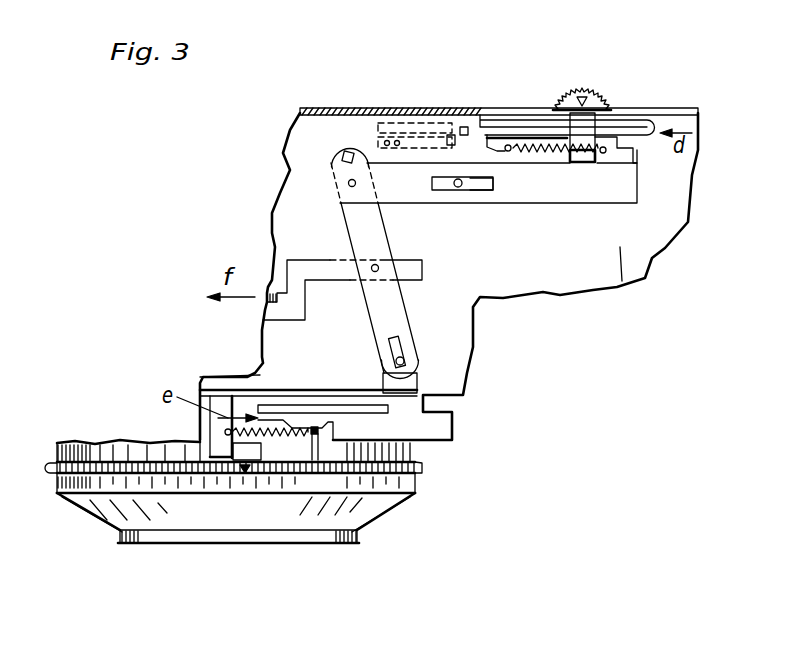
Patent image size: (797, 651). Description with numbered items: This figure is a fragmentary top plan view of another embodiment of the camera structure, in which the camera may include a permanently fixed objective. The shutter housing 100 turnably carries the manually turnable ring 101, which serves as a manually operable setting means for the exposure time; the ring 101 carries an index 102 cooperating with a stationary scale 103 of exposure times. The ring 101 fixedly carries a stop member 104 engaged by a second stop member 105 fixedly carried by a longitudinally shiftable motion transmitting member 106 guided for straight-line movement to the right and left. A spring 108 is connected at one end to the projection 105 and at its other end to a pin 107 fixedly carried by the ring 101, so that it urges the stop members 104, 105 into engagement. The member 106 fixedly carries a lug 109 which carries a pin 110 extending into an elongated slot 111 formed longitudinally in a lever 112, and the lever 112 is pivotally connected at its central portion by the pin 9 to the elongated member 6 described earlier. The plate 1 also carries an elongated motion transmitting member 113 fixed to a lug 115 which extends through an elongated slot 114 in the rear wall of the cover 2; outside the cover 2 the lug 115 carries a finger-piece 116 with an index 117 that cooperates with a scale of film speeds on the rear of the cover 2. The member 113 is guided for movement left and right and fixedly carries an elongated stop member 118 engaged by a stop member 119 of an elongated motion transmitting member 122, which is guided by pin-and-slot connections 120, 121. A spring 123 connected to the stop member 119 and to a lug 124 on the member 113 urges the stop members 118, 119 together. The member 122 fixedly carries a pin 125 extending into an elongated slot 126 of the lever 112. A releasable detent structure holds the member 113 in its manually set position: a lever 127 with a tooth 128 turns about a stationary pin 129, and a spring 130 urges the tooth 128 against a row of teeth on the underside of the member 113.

The plate 1 is at (305, 135).
The cover 2 is at (316, 110).
The elongated member 6 is at (325, 266).
The pin 9 is at (380, 266).
The shutter housing 100 is at (417, 455).
The manually turnable ring 101 is at (418, 480).
The index 102 is at (240, 474).
The stationary scale 103 is at (258, 482).
The stop member 104 is at (255, 455).
The second stop member 105 is at (220, 449).
The motion transmitting member 106 is at (241, 393).
The pin 107 is at (303, 482).
The spring 108 is at (276, 432).
The lug 109 is at (386, 384).
The pin 110 is at (405, 361).
The elongated slot 111 is at (399, 343).
The lever 112 is at (382, 222).
The elongated motion transmitting member 113 is at (638, 128).
The elongated slot 114 is at (422, 117).
The lug 115 is at (596, 122).
The finger-piece 116 is at (590, 90).
The index 117 is at (580, 97).
The elongated stop member 118 is at (582, 164).
The stop member 119 is at (618, 147).
The pin-and-slot connection 120 is at (460, 188).
The pin-and-slot connection 121 is at (481, 188).
The elongated motion transmitting member 122 is at (615, 197).
The spring 123 is at (548, 144).
The lug 124 is at (505, 143).
The pin 125 is at (347, 183).
The elongated slot 126 is at (346, 158).
The lever 127 is at (432, 135).
The tooth 128 is at (458, 113).
The stationary pin 129 is at (387, 120).
The spring 130 is at (445, 185).